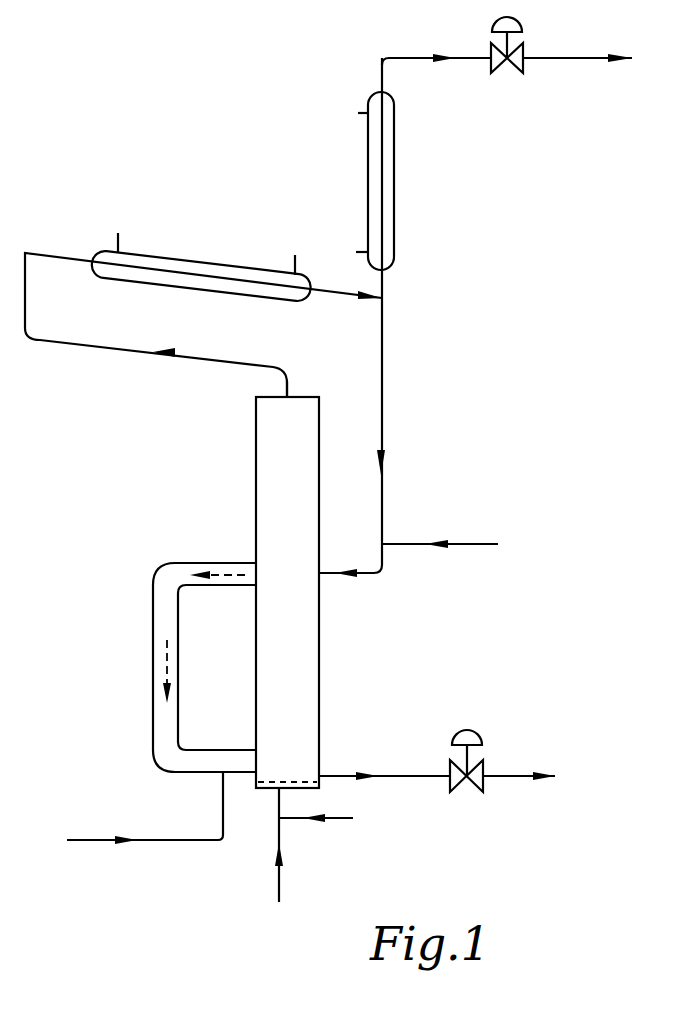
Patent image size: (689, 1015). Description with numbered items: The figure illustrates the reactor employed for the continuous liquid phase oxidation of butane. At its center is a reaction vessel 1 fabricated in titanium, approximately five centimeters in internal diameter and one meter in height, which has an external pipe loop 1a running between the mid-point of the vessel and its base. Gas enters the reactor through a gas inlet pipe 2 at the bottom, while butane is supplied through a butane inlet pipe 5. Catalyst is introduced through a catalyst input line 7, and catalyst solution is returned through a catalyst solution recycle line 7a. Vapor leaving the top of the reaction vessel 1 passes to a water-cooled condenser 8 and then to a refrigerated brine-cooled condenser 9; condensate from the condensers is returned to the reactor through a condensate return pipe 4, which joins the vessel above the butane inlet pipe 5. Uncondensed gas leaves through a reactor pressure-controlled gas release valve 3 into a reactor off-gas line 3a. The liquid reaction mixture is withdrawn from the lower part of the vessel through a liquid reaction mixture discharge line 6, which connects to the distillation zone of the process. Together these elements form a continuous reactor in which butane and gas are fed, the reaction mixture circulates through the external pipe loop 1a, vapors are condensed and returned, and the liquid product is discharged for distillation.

The reaction vessel 1 is at (256, 457).
The external pipe loop 1a is at (153, 675).
The gas inlet pipe 2 is at (279, 878).
The reactor pressure-controlled gas release valve 3 is at (522, 50).
The reactor off-gas line 3a is at (572, 60).
The condensate return pipe 4 is at (382, 398).
The butane inlet pipe 5 is at (470, 544).
The liquid reaction mixture discharge line 6 is at (515, 775).
The catalyst input line 7 is at (97, 840).
The catalyst solution recycle line 7a is at (340, 818).
The water-cooled condenser 8 is at (178, 258).
The refrigerated brine-cooled condenser 9 is at (394, 170).